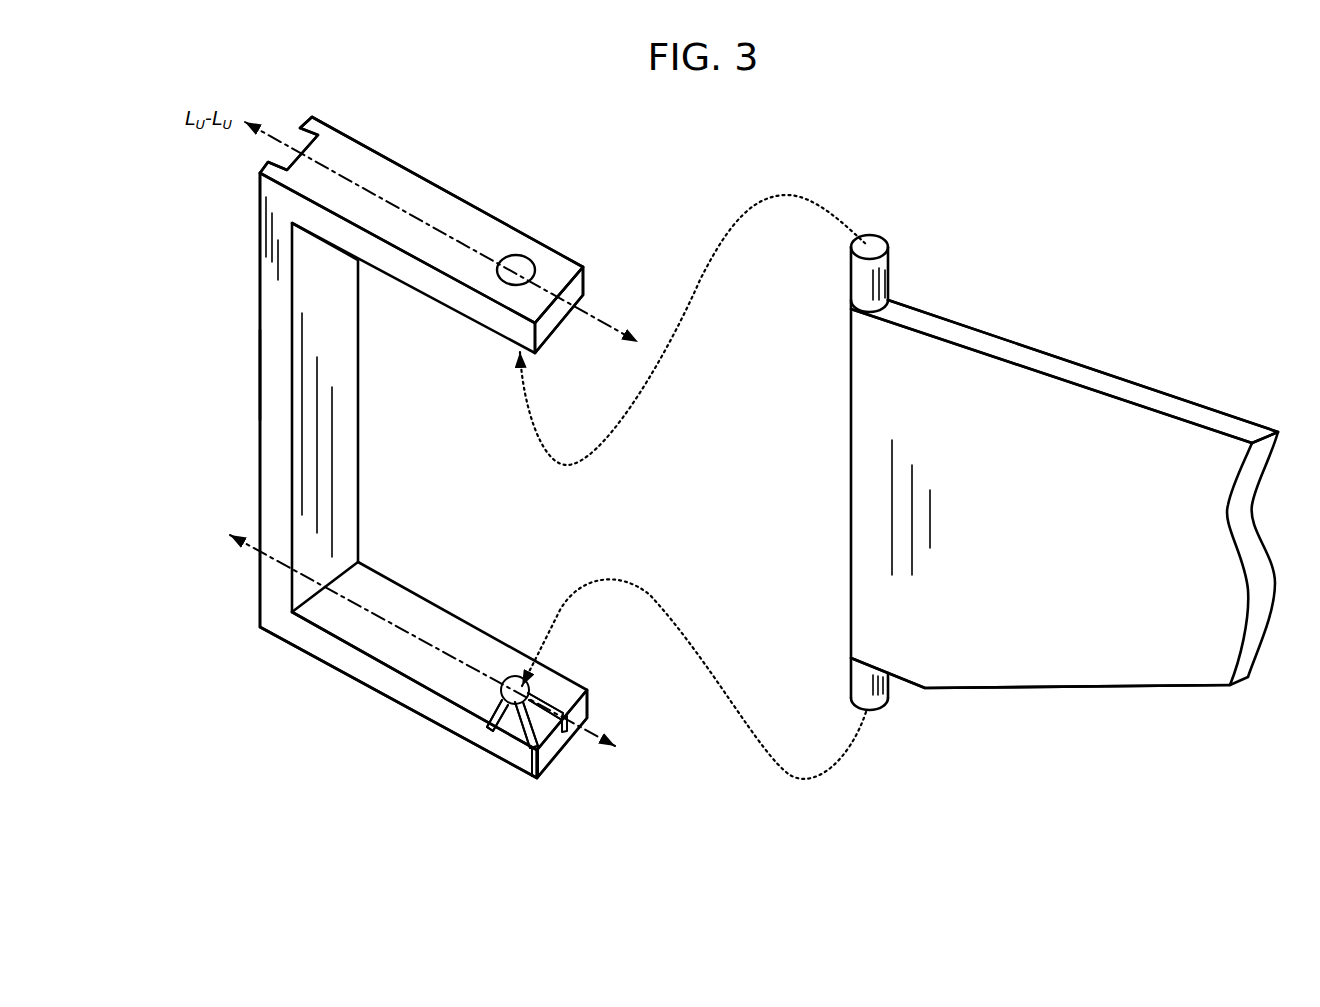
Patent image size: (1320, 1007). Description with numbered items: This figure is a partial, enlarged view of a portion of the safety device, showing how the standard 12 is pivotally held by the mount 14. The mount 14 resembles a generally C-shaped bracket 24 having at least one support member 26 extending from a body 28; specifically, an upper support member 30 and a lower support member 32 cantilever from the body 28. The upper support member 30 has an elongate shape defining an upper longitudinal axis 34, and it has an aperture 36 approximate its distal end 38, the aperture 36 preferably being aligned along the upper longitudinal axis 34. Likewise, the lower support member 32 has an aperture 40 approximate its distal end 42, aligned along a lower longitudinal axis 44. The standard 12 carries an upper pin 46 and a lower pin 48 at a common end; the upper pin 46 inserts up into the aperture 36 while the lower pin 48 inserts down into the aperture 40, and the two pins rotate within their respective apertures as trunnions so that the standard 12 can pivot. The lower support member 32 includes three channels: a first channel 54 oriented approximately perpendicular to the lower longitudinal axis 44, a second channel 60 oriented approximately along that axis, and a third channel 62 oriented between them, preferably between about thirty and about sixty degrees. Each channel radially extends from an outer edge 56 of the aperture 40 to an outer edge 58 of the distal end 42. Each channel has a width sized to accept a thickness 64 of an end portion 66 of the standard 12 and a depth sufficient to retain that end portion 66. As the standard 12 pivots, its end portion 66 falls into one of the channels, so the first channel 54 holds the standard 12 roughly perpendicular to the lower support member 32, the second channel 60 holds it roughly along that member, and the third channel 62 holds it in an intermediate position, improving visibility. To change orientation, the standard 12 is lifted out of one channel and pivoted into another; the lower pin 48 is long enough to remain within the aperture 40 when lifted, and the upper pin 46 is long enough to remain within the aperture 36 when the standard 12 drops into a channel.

The standard 12 is at (1088, 370).
The mount 14 is at (260, 283).
The bracket 24 is at (260, 326).
The support member 26 is at (345, 140).
The body 28 is at (260, 374).
The upper support member 30 is at (400, 178).
The lower support member 32 is at (305, 636).
The upper longitudinal axis 34 is at (271, 132).
The aperture 36 is at (520, 266).
The distal end 38 is at (585, 282).
The aperture 40 is at (509, 676).
The distal end 42 is at (548, 752).
The lower longitudinal axis 44 is at (612, 728).
The upper pin 46 is at (890, 258).
The lower pin 48 is at (850, 695).
The first channel 54 is at (478, 706).
The outer edge 56 is at (505, 677).
The outer edge 58 is at (520, 740).
The second channel 60 is at (562, 684).
The third channel 62 is at (535, 767).
The thickness 64 is at (895, 397).
The end portion 66 is at (913, 685).